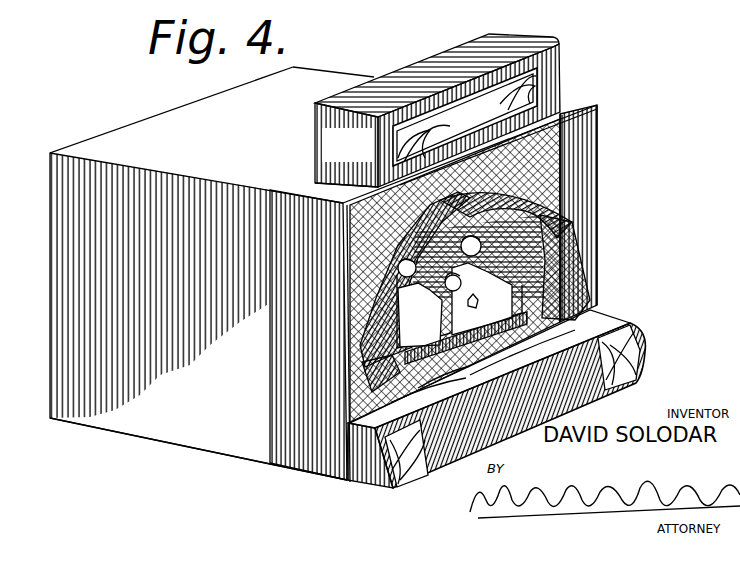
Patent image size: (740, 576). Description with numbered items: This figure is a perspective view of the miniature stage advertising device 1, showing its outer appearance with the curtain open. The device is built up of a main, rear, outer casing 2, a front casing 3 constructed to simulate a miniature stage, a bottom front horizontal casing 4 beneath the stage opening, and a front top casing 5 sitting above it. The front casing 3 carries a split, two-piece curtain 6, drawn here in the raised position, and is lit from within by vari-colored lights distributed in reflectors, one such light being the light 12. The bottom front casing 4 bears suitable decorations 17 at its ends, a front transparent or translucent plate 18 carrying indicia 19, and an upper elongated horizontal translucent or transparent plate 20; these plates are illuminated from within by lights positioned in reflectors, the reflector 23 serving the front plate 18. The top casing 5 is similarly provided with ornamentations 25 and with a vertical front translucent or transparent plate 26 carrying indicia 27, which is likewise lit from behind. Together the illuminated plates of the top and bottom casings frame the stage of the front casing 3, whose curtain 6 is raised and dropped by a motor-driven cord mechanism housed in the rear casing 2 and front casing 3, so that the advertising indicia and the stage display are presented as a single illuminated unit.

The miniature stage advertising device 1 is at (80, 112).
The main rear outer casing 2 is at (160, 285).
The front casing 3 is at (310, 336).
The bottom front horizontal casing 4 is at (352, 457).
The front top casing 5 is at (388, 92).
The split curtain 6 is at (378, 343).
The vari-colored light 12 is at (520, 280).
The decorations 17 is at (398, 472).
The front transparent or translucent plate 18 is at (477, 457).
The indicia 19 is at (590, 395).
The upper elongated horizontal translucent or transparent plate 20 is at (372, 427).
The reflector 23 is at (394, 140).
The ornamentations 25 is at (535, 72).
The vertical front translucent or transparent plate 26 is at (523, 102).
The indicia 27 is at (508, 62).